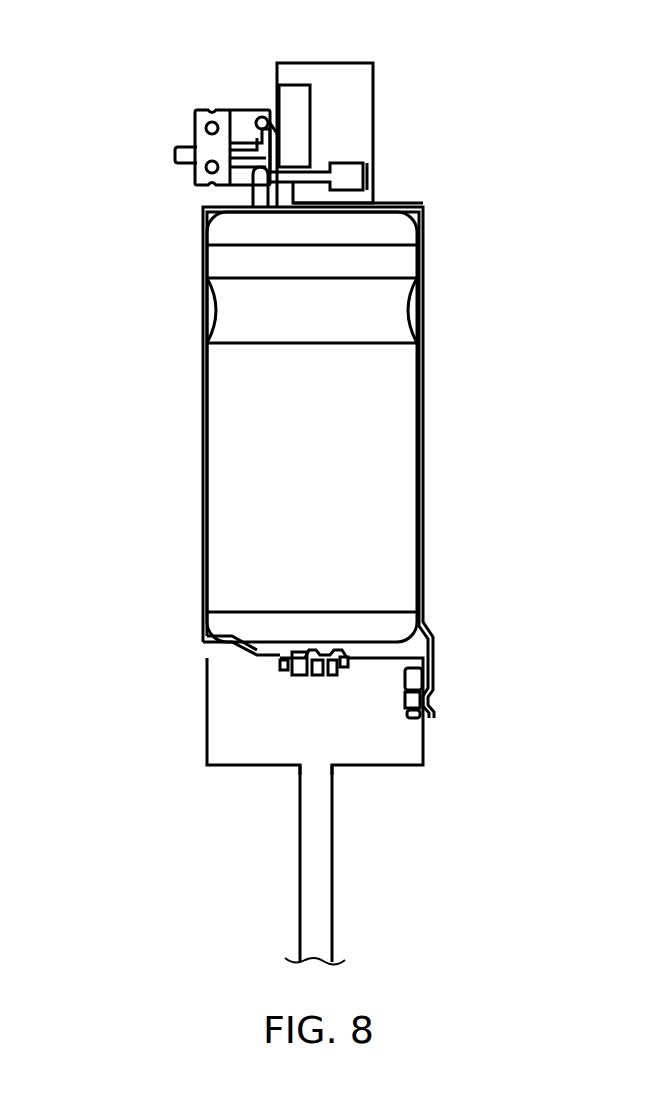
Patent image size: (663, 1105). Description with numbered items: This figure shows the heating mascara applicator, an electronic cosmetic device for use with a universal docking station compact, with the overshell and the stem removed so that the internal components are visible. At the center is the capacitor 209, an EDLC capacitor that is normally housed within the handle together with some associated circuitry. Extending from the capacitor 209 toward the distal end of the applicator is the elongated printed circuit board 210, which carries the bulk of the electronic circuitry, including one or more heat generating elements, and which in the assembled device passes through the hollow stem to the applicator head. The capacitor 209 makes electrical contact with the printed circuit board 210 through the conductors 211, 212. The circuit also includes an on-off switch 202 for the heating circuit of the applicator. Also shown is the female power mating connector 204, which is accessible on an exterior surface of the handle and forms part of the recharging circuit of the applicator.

The on-off switch 202 is at (177, 153).
The female power mating connector 204 is at (360, 75).
The capacitor 209 is at (393, 496).
The printed circuit board 210 is at (322, 856).
The conductor 211 is at (203, 314).
The conductor 212 is at (423, 312).